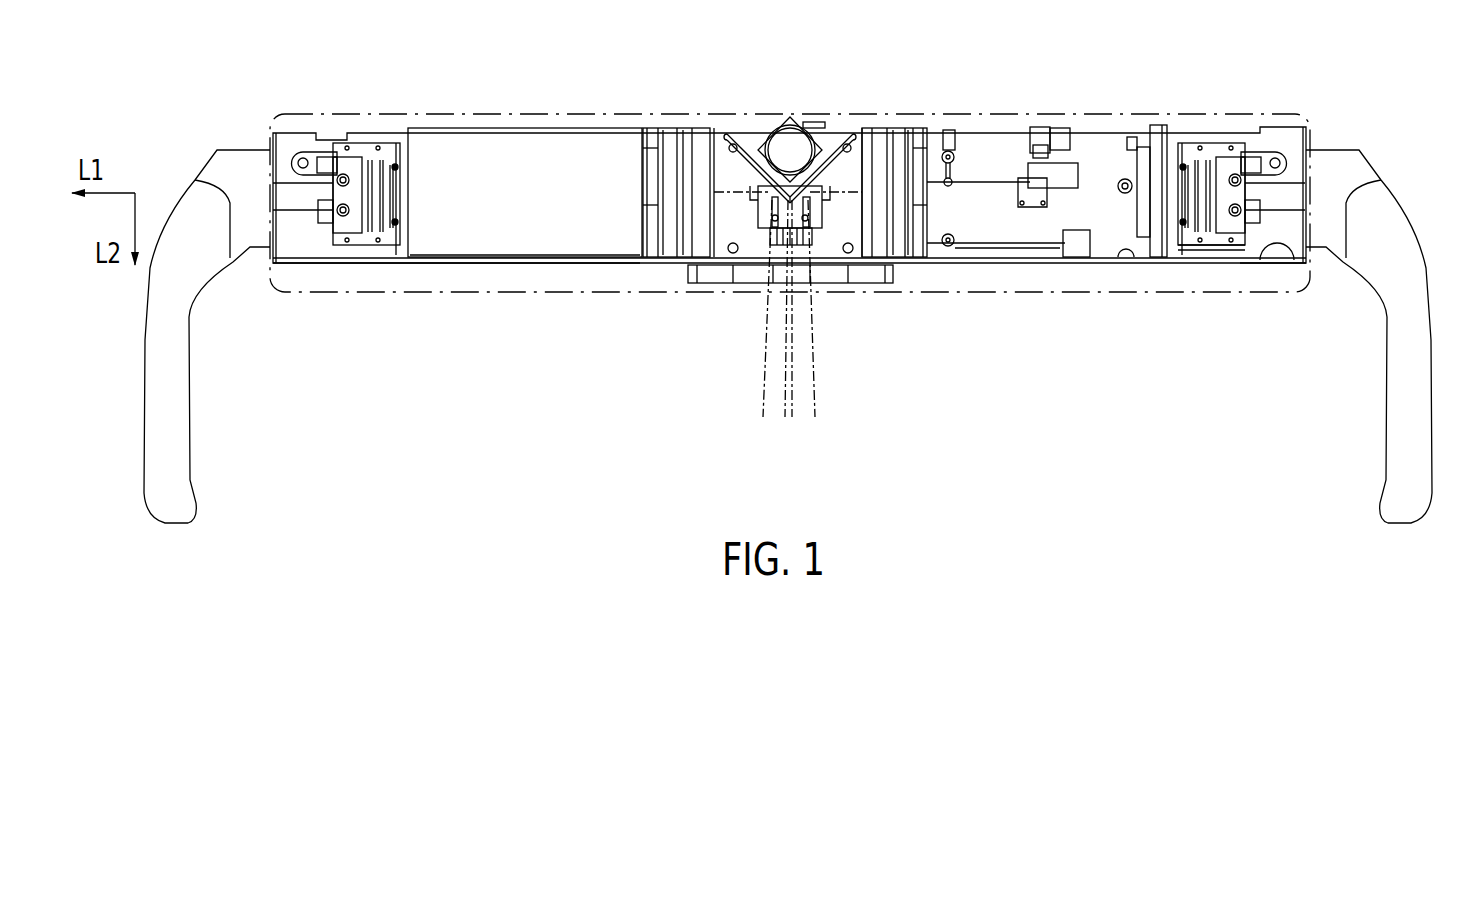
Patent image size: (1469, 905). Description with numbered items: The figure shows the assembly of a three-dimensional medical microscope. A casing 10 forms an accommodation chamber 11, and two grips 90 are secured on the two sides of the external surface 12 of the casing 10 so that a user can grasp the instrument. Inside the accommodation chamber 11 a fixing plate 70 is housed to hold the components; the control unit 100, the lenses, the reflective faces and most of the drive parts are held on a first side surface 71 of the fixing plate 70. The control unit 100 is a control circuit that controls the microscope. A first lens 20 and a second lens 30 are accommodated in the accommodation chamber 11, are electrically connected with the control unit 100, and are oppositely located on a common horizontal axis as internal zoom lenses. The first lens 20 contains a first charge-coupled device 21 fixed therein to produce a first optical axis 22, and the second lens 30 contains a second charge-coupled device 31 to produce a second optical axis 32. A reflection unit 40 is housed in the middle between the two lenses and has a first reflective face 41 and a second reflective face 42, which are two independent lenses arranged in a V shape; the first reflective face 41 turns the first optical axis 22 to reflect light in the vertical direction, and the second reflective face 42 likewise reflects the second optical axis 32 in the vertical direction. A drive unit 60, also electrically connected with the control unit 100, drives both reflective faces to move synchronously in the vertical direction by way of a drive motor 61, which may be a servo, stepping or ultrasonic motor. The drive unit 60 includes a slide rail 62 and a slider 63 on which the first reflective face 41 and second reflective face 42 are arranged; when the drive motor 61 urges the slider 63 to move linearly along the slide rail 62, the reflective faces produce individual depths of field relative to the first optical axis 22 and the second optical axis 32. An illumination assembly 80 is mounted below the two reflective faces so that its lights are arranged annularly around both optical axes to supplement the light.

The casing 10 is at (1012, 110).
The accommodation chamber 11 is at (520, 270).
The external surface 12 is at (1325, 265).
The first lens 20 is at (658, 132).
The first charge-coupled device (CCD) 21 is at (382, 157).
The first optical axis 22 is at (733, 193).
The second lens 30 is at (920, 130).
The second charge-coupled device (CCD) 31 is at (1215, 150).
The second optical axis 32 is at (848, 193).
The reflection unit 40 is at (791, 112).
The first reflective face 41 is at (732, 172).
The second reflective face 42 is at (852, 162).
The drive unit 60 is at (784, 180).
The drive motor 61 is at (788, 140).
The slide rail 62 is at (765, 240).
The slider 63 is at (817, 212).
The fixing plate 70 is at (1293, 140).
The first side surface 71 is at (1243, 250).
The illumination assembly 80 is at (697, 280).
The grip 90 is at (233, 147).
The control unit 100 is at (528, 162).